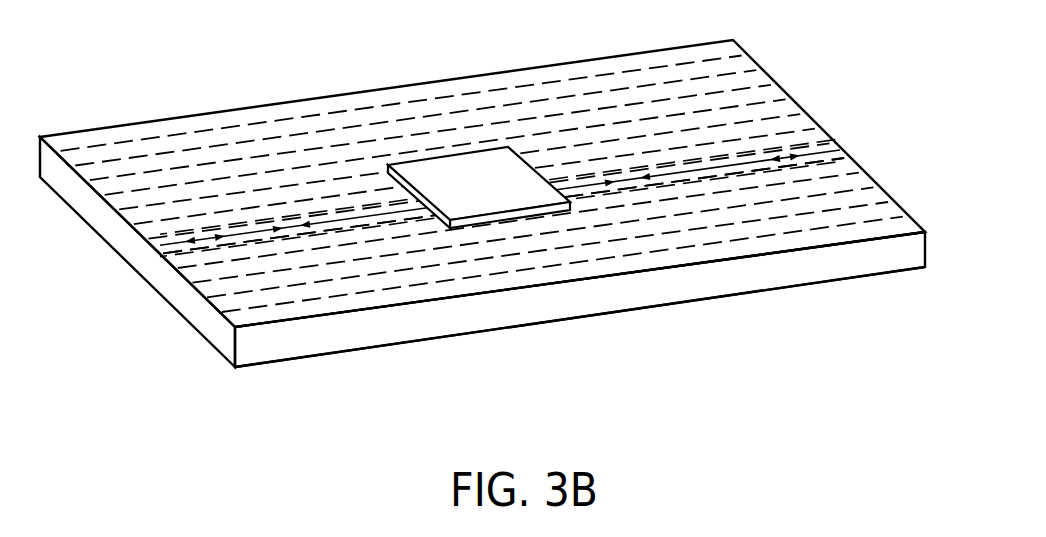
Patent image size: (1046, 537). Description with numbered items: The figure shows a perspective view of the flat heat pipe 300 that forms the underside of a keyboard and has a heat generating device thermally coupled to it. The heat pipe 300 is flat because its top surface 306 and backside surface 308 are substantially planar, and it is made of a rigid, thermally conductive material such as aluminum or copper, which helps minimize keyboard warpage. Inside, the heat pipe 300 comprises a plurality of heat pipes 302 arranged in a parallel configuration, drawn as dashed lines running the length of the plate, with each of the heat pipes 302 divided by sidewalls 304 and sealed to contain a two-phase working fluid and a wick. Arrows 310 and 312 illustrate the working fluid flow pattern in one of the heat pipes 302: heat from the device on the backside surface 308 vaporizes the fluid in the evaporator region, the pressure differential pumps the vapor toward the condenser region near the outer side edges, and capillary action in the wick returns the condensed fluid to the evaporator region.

The heat pipe 300 is at (333, 337).
The heat pipes 302 is at (753, 90).
The sidewalls 304 is at (479, 187).
The top surface 306 is at (773, 290).
The backside surface 308 is at (600, 267).
The arrows 310 is at (802, 160).
The arrows 312 is at (770, 152).